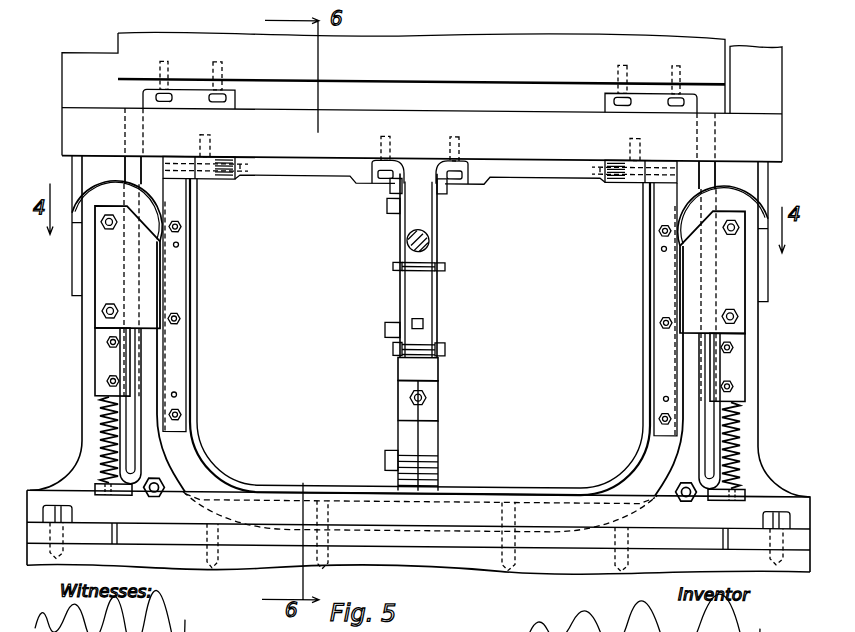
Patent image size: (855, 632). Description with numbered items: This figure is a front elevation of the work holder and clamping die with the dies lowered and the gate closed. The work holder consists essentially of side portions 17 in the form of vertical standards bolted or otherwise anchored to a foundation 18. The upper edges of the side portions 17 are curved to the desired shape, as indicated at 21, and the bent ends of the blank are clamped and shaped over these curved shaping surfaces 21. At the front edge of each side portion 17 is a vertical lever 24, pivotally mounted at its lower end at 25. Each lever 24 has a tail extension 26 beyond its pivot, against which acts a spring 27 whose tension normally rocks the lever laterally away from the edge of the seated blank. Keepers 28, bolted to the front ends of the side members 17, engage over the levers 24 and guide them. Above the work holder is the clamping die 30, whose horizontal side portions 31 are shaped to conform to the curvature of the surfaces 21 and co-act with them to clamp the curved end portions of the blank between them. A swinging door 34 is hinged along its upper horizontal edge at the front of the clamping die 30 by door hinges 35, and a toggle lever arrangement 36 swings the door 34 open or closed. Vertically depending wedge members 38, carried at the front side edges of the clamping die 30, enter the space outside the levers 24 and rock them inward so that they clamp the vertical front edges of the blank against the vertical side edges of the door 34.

The side portions 17 is at (88, 358).
The foundation 18 is at (248, 577).
The curved shaping surfaces 21 is at (83, 221).
The vertical lever 24 is at (150, 369).
The pivot 25 is at (153, 498).
The tail extension 26 is at (96, 492).
The spring 27 is at (100, 440).
The keeper 28 is at (107, 286).
The clamping die 30 is at (67, 122).
The horizontal side portions 31 is at (88, 202).
The swinging door 34 is at (420, 337).
The door hinges 35 is at (230, 178).
The toggle lever arrangement 36 is at (403, 301).
The wedge members 38 is at (127, 446).